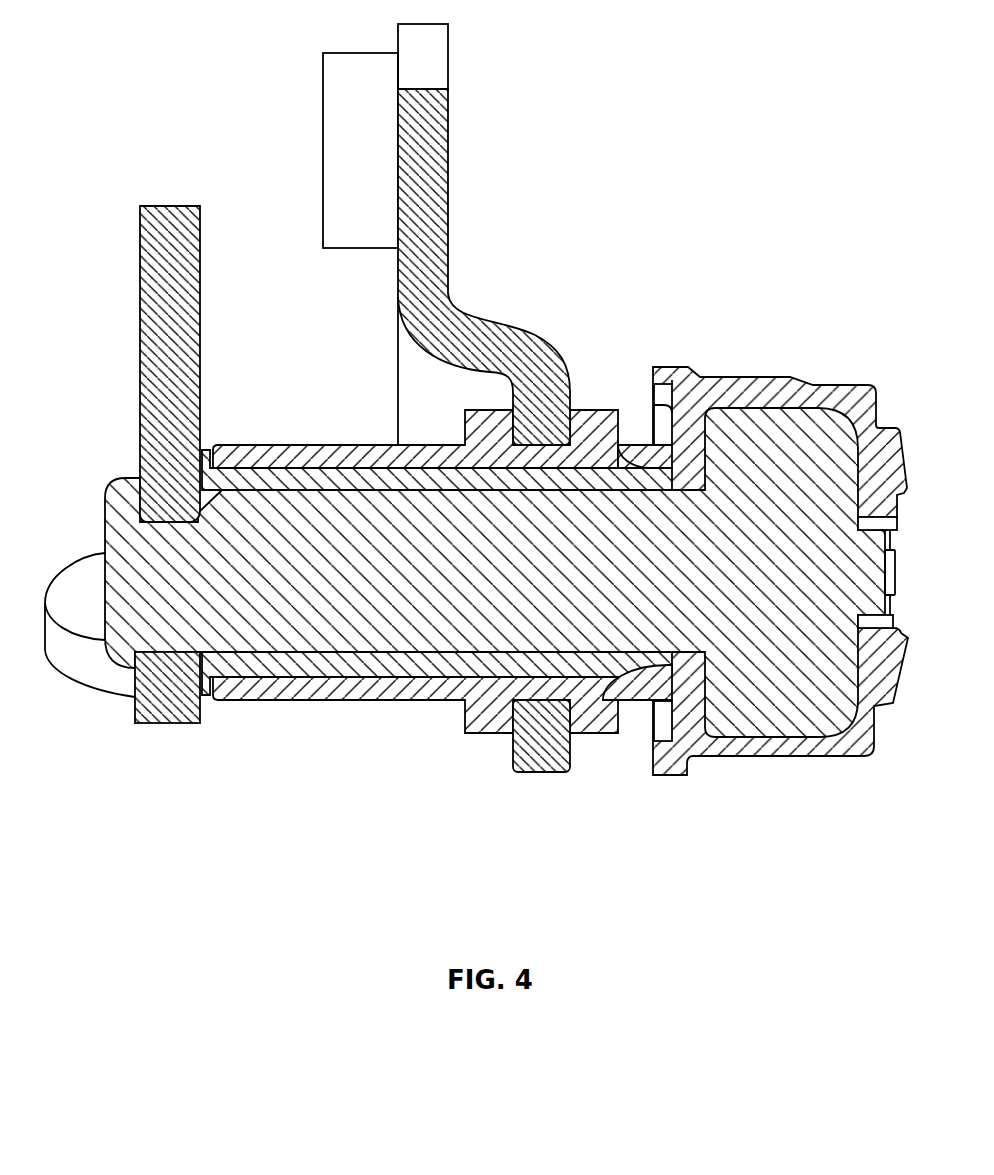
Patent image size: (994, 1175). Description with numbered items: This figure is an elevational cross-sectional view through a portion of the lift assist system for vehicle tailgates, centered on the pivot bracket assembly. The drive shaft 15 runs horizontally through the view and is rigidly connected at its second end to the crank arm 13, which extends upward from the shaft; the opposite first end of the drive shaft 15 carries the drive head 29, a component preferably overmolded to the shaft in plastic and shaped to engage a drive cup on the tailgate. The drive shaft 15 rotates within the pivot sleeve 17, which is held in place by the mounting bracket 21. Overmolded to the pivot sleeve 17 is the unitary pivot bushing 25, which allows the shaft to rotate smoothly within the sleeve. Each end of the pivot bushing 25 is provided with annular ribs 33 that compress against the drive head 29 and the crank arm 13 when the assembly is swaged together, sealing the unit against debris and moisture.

The crank arm 13 is at (140, 254).
The drive shaft 15 is at (157, 553).
The pivot sleeve 17 is at (598, 410).
The mounting bracket 21 is at (448, 258).
The pivot bushing 25 is at (612, 475).
The drive head 29 is at (833, 383).
The annular ribs 33 is at (644, 466).